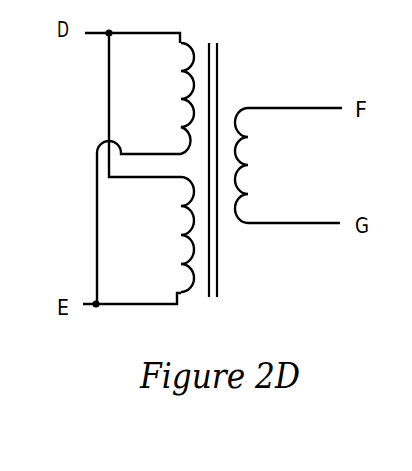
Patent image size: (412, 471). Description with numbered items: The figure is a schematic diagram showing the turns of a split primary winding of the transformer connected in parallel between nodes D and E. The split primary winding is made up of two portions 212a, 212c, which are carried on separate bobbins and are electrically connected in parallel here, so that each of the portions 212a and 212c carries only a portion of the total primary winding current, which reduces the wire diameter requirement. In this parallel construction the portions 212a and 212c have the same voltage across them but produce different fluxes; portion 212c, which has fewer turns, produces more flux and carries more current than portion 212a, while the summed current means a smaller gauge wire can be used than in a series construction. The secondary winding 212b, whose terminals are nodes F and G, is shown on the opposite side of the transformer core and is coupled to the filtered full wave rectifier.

The portion of split primary winding 212a is at (182, 98).
The secondary winding 212b is at (245, 193).
The portion of split primary winding 212c is at (182, 234).